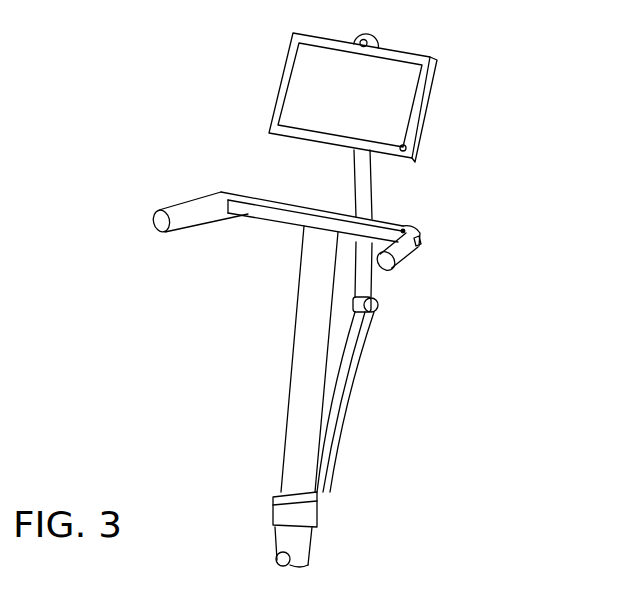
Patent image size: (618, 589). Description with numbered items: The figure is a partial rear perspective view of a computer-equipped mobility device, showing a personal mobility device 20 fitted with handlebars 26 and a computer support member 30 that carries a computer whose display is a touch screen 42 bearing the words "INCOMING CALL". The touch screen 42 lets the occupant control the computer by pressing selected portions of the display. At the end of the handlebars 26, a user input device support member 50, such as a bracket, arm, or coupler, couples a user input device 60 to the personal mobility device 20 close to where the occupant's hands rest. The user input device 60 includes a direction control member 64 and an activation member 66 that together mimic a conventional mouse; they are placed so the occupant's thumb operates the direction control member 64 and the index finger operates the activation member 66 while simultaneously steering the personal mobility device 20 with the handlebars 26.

The personal mobility device 20 is at (242, 288).
The handlebars 26 is at (250, 213).
The computer support member 30 is at (355, 395).
The touch screen 42 is at (305, 103).
The user input device support member 50 is at (402, 262).
The user input device 60 is at (422, 228).
The direction control member 64 is at (403, 229).
The activation member 66 is at (419, 241).